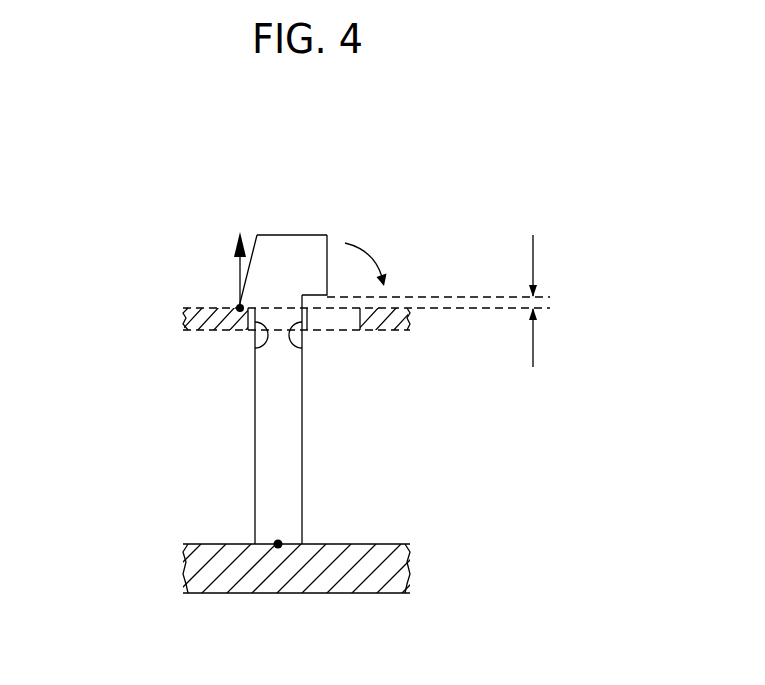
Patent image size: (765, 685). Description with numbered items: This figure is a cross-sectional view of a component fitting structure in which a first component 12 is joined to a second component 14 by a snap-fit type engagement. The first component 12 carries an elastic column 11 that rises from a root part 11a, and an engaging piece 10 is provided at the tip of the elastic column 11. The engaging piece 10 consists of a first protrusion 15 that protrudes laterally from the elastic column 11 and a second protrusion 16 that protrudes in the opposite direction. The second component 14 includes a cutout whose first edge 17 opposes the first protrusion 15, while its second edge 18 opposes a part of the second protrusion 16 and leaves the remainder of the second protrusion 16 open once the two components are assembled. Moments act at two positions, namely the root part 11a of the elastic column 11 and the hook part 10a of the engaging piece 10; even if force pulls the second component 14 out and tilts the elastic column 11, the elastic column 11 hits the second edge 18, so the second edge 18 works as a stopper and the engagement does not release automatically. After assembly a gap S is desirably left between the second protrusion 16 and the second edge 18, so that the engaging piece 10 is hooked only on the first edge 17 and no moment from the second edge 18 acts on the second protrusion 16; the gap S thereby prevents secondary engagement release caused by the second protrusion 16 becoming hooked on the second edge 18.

The engaging piece 10 is at (252, 138).
The hook part 10a is at (240, 306).
The elastic column 11 is at (253, 445).
The root part 11a is at (280, 542).
The first component 12 is at (203, 565).
The second component 14 is at (187, 317).
The first protrusion 15 is at (258, 236).
The second protrusion 16 is at (328, 237).
The first edge 17 is at (253, 347).
The second edge 18 is at (339, 320).
The gap S is at (533, 260).